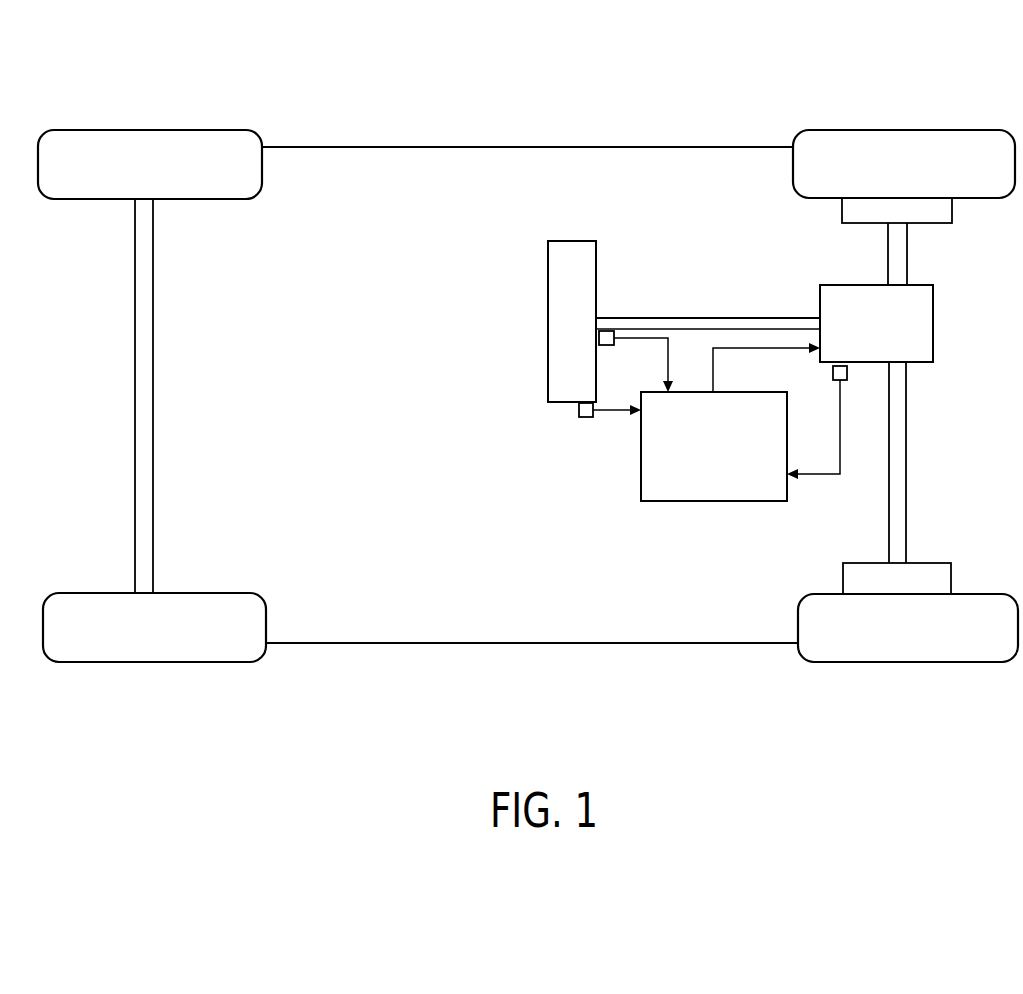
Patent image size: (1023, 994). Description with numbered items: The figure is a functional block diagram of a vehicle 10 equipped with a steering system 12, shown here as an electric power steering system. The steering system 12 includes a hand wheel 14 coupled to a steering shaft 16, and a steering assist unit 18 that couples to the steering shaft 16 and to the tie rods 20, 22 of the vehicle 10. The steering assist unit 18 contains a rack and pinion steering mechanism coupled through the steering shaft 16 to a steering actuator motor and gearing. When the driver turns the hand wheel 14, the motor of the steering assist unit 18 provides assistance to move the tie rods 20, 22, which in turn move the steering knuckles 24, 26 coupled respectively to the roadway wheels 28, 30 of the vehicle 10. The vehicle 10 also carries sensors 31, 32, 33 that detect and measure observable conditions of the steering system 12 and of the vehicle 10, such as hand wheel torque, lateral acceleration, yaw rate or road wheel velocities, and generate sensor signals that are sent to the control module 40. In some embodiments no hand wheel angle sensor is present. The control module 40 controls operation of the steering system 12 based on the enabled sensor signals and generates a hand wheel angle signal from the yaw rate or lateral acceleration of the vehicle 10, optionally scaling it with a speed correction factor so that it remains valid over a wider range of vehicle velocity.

The vehicle 10 is at (569, 52).
The steering system 12 is at (678, 215).
The hand wheel 14 is at (570, 241).
The steering shaft 16 is at (680, 318).
The steering assist unit 18 is at (935, 318).
The tie rod 20 is at (907, 262).
The tie rod 22 is at (907, 436).
The steering knuckle 24 is at (841, 205).
The steering knuckle 26 is at (868, 562).
The roadway wheel 28 is at (943, 128).
The roadway wheel 30 is at (960, 592).
The sensor 31 is at (603, 347).
The sensor 32 is at (848, 373).
The sensor 33 is at (582, 418).
The control module 40 is at (732, 392).